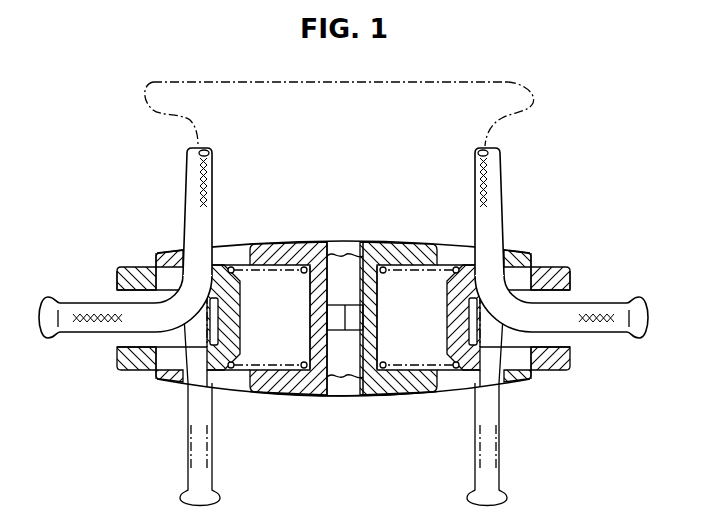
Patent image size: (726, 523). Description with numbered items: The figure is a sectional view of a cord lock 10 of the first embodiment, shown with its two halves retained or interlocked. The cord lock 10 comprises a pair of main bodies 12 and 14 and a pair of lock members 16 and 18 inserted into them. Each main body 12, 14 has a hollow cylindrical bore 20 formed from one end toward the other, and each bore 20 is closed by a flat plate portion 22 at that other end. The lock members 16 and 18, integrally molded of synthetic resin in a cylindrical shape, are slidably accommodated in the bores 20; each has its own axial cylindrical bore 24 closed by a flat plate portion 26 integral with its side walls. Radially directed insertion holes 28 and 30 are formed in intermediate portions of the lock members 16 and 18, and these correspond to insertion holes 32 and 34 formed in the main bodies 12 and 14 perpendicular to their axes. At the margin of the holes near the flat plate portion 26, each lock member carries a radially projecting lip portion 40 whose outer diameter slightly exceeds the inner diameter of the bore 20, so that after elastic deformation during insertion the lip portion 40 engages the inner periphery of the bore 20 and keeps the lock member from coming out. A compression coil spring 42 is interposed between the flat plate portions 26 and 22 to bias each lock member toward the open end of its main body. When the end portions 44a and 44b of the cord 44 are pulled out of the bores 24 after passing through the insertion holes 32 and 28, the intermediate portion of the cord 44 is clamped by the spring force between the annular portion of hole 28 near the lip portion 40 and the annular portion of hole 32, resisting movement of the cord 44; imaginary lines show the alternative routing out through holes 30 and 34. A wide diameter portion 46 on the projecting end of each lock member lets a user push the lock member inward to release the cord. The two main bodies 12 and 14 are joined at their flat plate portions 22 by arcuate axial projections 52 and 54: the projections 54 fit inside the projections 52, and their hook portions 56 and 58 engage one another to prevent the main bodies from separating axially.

The cord lock 10 is at (536, 200).
The main body 12 is at (282, 247).
The main body 14 is at (393, 247).
The lock member 16 is at (130, 375).
The lock member 18 is at (567, 268).
The cylindrical bore 20 is at (278, 387).
The flat plate portion 22 is at (318, 341).
The cylindrical bore 24 is at (120, 342).
The flat plate portion 26 is at (240, 320).
The insertion hole 28 is at (158, 256).
The insertion hole 30 is at (170, 363).
The insertion hole 32 is at (243, 258).
The insertion hole 34 is at (240, 386).
The lip portion 40 is at (216, 260).
The compression coil spring 42 is at (250, 274).
The cord 44 is at (441, 88).
The end portion of the cord 44a is at (214, 165).
The end portion of the cord 44b is at (607, 303).
The wide diameter portion 46 is at (117, 265).
The projection 52 is at (332, 246).
The projection 54 is at (343, 268).
The hook portion 56 is at (340, 257).
The hook portion 58 is at (352, 255).